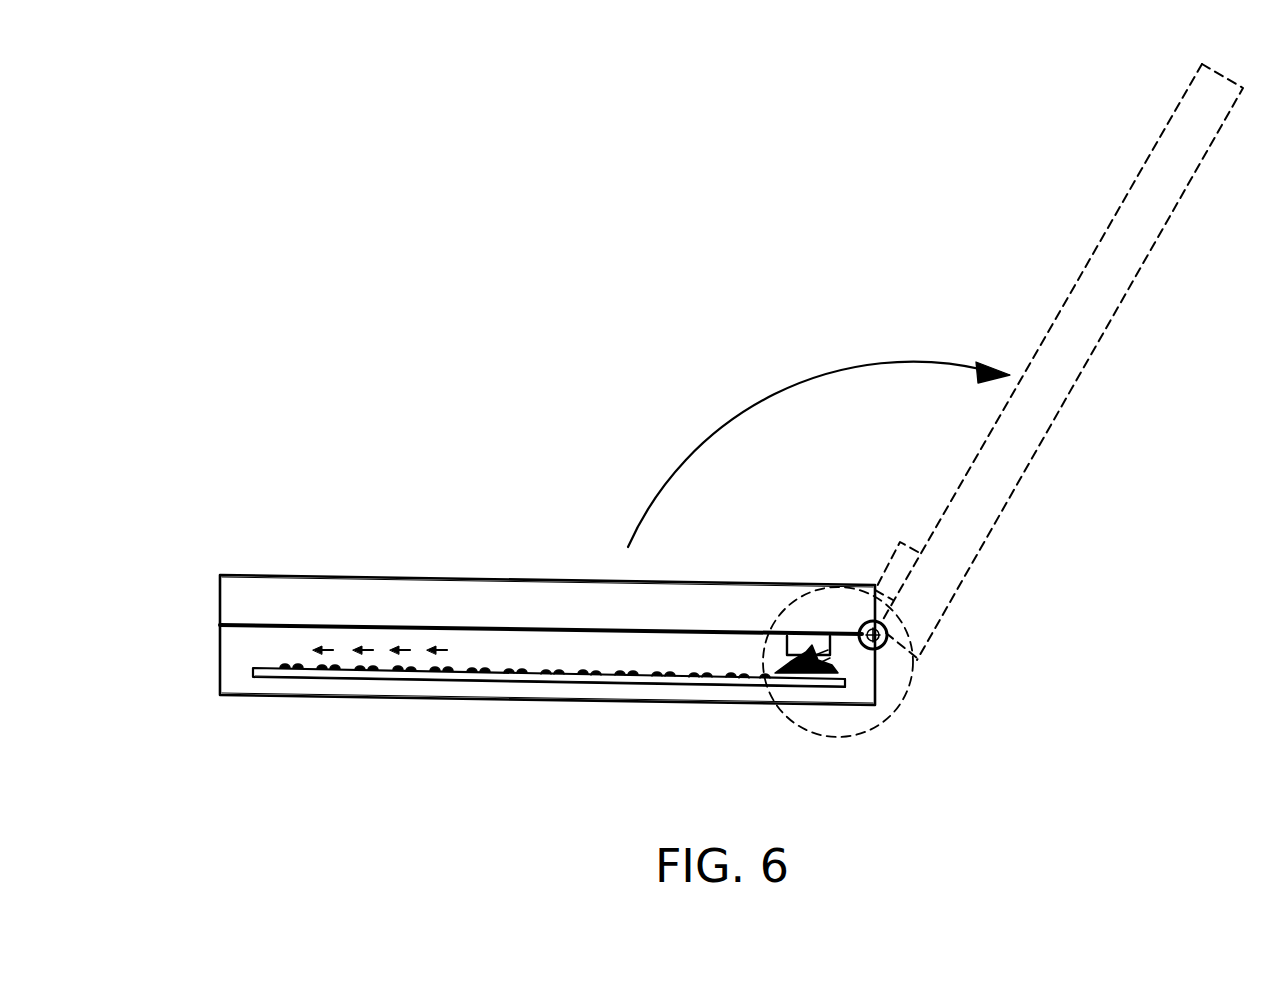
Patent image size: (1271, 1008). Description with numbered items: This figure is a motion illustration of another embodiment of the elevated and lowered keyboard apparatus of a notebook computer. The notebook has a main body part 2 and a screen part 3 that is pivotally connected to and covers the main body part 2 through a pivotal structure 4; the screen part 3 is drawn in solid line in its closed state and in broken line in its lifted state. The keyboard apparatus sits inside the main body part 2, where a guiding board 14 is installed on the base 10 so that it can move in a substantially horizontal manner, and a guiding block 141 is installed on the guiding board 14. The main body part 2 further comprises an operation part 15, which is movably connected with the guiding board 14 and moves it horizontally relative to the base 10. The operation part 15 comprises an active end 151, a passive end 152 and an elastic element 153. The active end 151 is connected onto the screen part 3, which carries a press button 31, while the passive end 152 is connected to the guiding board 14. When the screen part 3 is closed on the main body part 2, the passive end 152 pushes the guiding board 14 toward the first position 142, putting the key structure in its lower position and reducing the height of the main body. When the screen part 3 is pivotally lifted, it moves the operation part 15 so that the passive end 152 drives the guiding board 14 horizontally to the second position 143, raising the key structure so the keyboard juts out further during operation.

The main body part 2 is at (272, 694).
The screen part 3 is at (290, 598).
The pivotal structure 4 is at (888, 634).
The base 10 is at (566, 688).
The guiding board 14 is at (381, 676).
The guiding block 141 is at (481, 678).
The first position 142 is at (266, 669).
The second position 143 is at (289, 685).
The operation part 15 is at (890, 490).
The active end 151 is at (848, 640).
The passive end 152 is at (798, 653).
The elastic element 153 is at (825, 652).
The press button 31 is at (778, 633).